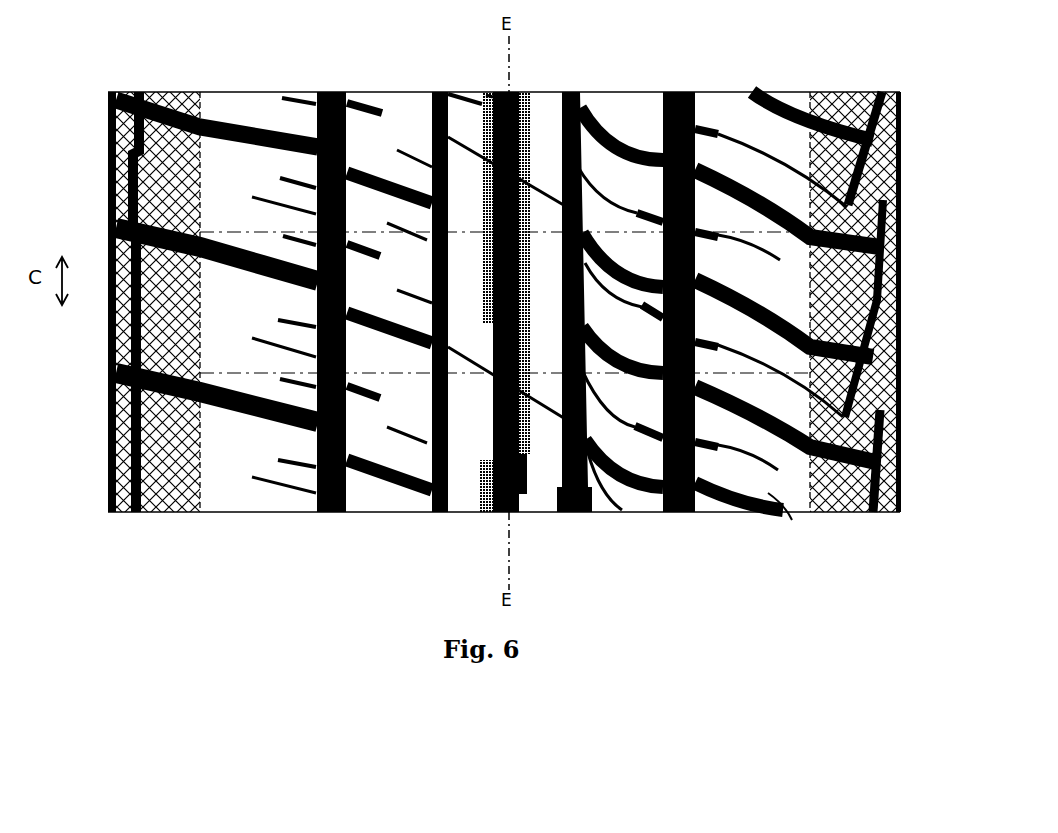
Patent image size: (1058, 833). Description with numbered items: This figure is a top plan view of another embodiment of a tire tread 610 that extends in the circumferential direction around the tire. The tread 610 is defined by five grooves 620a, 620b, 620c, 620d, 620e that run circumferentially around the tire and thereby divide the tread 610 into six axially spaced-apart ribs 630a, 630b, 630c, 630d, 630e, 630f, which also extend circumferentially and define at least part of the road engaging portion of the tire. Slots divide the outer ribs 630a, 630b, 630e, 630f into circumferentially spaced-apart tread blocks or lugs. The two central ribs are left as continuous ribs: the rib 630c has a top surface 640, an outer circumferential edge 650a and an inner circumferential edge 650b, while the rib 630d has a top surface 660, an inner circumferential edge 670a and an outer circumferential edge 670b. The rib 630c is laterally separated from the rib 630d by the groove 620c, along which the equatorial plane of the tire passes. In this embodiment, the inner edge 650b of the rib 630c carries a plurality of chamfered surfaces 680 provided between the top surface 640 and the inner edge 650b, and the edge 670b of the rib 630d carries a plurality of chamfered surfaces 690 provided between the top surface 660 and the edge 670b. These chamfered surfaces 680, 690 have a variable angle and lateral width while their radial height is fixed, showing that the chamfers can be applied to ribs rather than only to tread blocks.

The tire tread 610 is at (790, 76).
The circumferential groove 620a is at (327, 514).
The circumferential groove 620b is at (437, 514).
The circumferential groove 620c is at (491, 514).
The circumferential groove 620d is at (577, 514).
The circumferential groove 620e is at (682, 514).
The rib 630a is at (230, 500).
The rib 630b is at (372, 500).
The rib 630c is at (463, 500).
The rib 630d is at (535, 510).
The rib 630e is at (645, 510).
The rib 630f is at (777, 510).
The top surface 640 is at (472, 266).
The outer circumferential edge 650a is at (444, 91).
The inner circumferential edge 650b is at (489, 91).
The top surface 660 is at (556, 277).
The inner circumferential edge 670a is at (520, 91).
The outer circumferential edge 670b is at (565, 91).
The chamfered surface 680 is at (483, 277).
The chamfered surface 690 is at (530, 446).